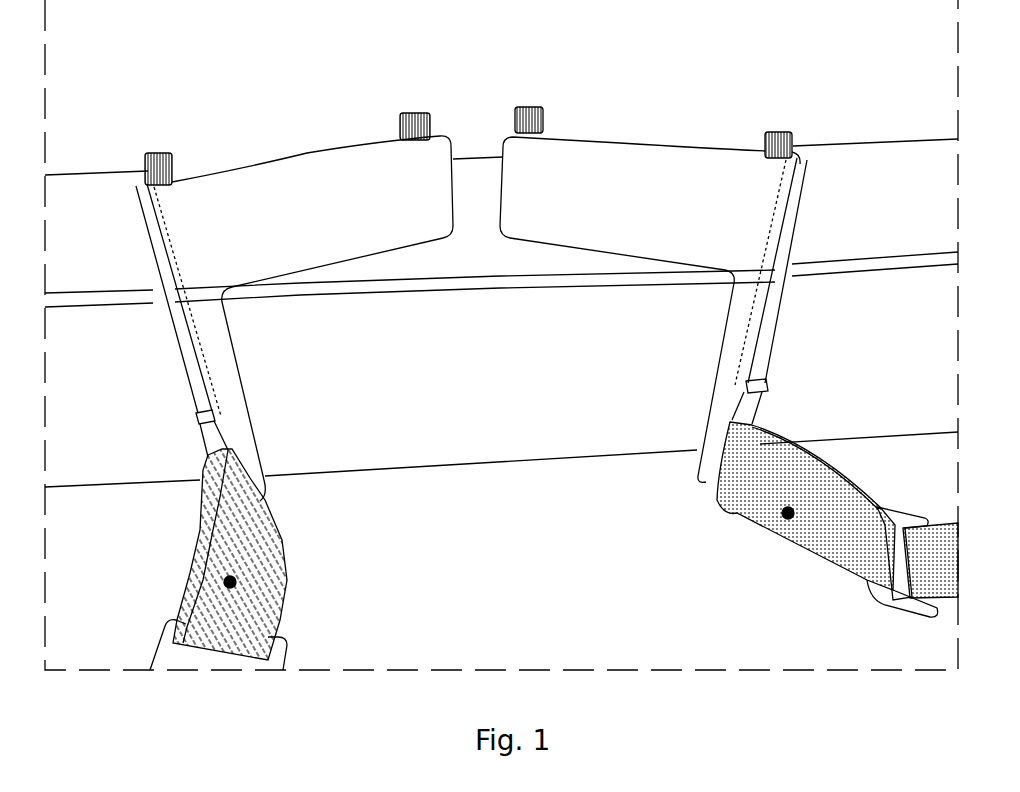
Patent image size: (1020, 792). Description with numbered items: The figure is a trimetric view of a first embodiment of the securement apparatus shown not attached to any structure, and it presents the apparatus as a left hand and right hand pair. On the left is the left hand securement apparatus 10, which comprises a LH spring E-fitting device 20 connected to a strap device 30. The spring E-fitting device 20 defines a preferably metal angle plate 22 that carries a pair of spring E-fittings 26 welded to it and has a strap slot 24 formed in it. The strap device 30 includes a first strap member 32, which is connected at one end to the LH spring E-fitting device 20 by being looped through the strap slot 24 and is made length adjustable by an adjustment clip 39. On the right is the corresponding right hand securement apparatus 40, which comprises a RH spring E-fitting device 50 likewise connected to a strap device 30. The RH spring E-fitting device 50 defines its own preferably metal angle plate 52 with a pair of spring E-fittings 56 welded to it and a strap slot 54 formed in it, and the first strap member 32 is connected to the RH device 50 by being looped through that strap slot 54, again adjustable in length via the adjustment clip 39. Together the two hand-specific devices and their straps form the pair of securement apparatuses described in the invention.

The left hand securement apparatus 10 is at (185, 413).
The LH spring E-fitting device 20 is at (312, 143).
The angle plate 22 is at (340, 262).
The strap slot 24 is at (233, 447).
The spring E-fittings 26 is at (155, 152).
The strap device 30 is at (288, 533).
The first strap member 32 is at (230, 582).
The adjustment clip 39 is at (288, 640).
The right hand securement apparatus 40 is at (783, 410).
The RH spring E-fitting device 50 is at (648, 130).
The angle plate 52 is at (723, 298).
The strap slot 54 is at (737, 410).
The spring E-fittings 56 is at (542, 105).